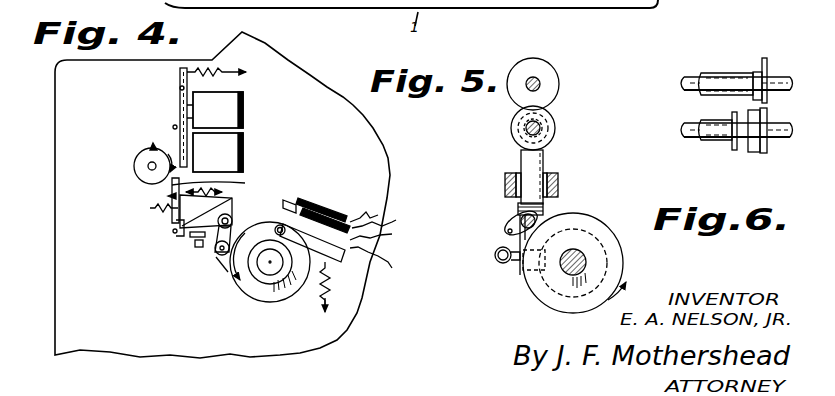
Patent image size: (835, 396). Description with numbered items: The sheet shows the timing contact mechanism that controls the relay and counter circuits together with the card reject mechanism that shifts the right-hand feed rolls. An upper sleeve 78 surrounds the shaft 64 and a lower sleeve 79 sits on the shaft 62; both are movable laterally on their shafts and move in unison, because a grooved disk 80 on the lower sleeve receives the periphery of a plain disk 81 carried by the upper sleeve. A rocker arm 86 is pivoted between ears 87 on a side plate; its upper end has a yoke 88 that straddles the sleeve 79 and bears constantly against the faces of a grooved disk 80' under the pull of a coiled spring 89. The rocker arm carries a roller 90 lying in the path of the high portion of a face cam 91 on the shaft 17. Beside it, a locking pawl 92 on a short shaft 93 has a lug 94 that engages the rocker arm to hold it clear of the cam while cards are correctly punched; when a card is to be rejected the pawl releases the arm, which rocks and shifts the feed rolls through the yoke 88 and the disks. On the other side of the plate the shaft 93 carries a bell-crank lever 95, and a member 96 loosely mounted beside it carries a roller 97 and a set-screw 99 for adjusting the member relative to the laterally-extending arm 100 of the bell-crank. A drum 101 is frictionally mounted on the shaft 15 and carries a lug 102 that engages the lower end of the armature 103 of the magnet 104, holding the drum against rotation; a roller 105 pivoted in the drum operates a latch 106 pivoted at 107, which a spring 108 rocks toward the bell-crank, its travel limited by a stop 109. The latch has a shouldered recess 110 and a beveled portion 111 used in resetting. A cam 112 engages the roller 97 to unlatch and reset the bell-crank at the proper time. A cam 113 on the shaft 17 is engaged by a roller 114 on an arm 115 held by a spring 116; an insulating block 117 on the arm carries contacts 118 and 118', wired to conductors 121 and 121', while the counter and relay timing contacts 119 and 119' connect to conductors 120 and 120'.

In FIG. 4, the shaft 15 is at (150, 167).
In FIG. 4, the shaft 17 is at (266, 268).
In FIG. 5, the shaft 17 is at (587, 263).
In FIG. 5, the shaft 62 is at (541, 128).
In FIG. 6, the shaft 62 is at (697, 140).
In FIG. 5, the shaft 64 is at (542, 82).
In FIG. 6, the shaft 64 is at (692, 72).
In FIG. 6, the sleeve 78 is at (726, 73).
In FIG. 6, the sleeve 79 is at (718, 142).
In FIG. 5, the grooved disk 80 is at (512, 128).
In FIG. 6, the grooved disk 80 is at (774, 147).
In FIG. 6, the grooved disk 80' is at (744, 152).
In FIG. 5, the plain disk 81 is at (531, 60).
In FIG. 6, the plain disk 81 is at (766, 58).
In FIG. 5, the rocker arm 86 is at (545, 165).
In FIG. 5, the ears 87 is at (505, 180).
In FIG. 5, the yoke 88 is at (518, 122).
In FIG. 5, the coiled spring 89 is at (500, 263).
In FIG. 5, the roller 90 is at (528, 276).
In FIG. 5, the face cam 91 is at (608, 238).
In FIG. 5, the locking pawl 92 is at (513, 222).
In FIG. 4, the short shaft 93 is at (232, 216).
In FIG. 5, the short shaft 93 is at (548, 214).
In FIG. 5, the lug 94 is at (506, 232).
In FIG. 4, the bell-crank lever 95 is at (197, 238).
In FIG. 4, the member 96 is at (219, 255).
In FIG. 4, the roller 97 is at (226, 274).
In FIG. 4, the set-screw 99 is at (199, 248).
In FIG. 4, the laterally-extending arm 100 is at (206, 211).
In FIG. 4, the drum 101 is at (145, 151).
In FIG. 4, the lug 102 is at (228, 172).
In FIG. 4, the armature 103 is at (178, 100).
In FIG. 4, the magnet 104 is at (236, 118).
In FIG. 4, the roller 105 is at (162, 145).
In FIG. 4, the latch 106 is at (228, 184).
In FIG. 4, the pivot 107 is at (172, 208).
In FIG. 4, the spring 108 is at (146, 208).
In FIG. 4, the stop 109 is at (170, 196).
In FIG. 4, the shouldered recess 110 is at (176, 232).
In FIG. 4, the beveled portion 111 is at (174, 242).
In FIG. 4, the cam 112 is at (268, 300).
In FIG. 4, the cam 113 is at (283, 268).
In FIG. 4, the roller 114 is at (275, 231).
In FIG. 4, the arm 115 is at (327, 268).
In FIG. 4, the spring 116 is at (328, 298).
In FIG. 4, the insulating block 117 is at (290, 200).
In FIG. 4, the contact 118 is at (326, 207).
In FIG. 4, the contact 118' is at (339, 201).
In FIG. 4, the counter timing contact 119 is at (326, 192).
In FIG. 4, the relay timing contact 119' is at (338, 190).
In FIG. 4, the conductor 120 is at (388, 213).
In FIG. 4, the conductor 120' is at (387, 200).
In FIG. 4, the conductor 121 is at (389, 264).
In FIG. 4, the conductor 121' is at (389, 232).